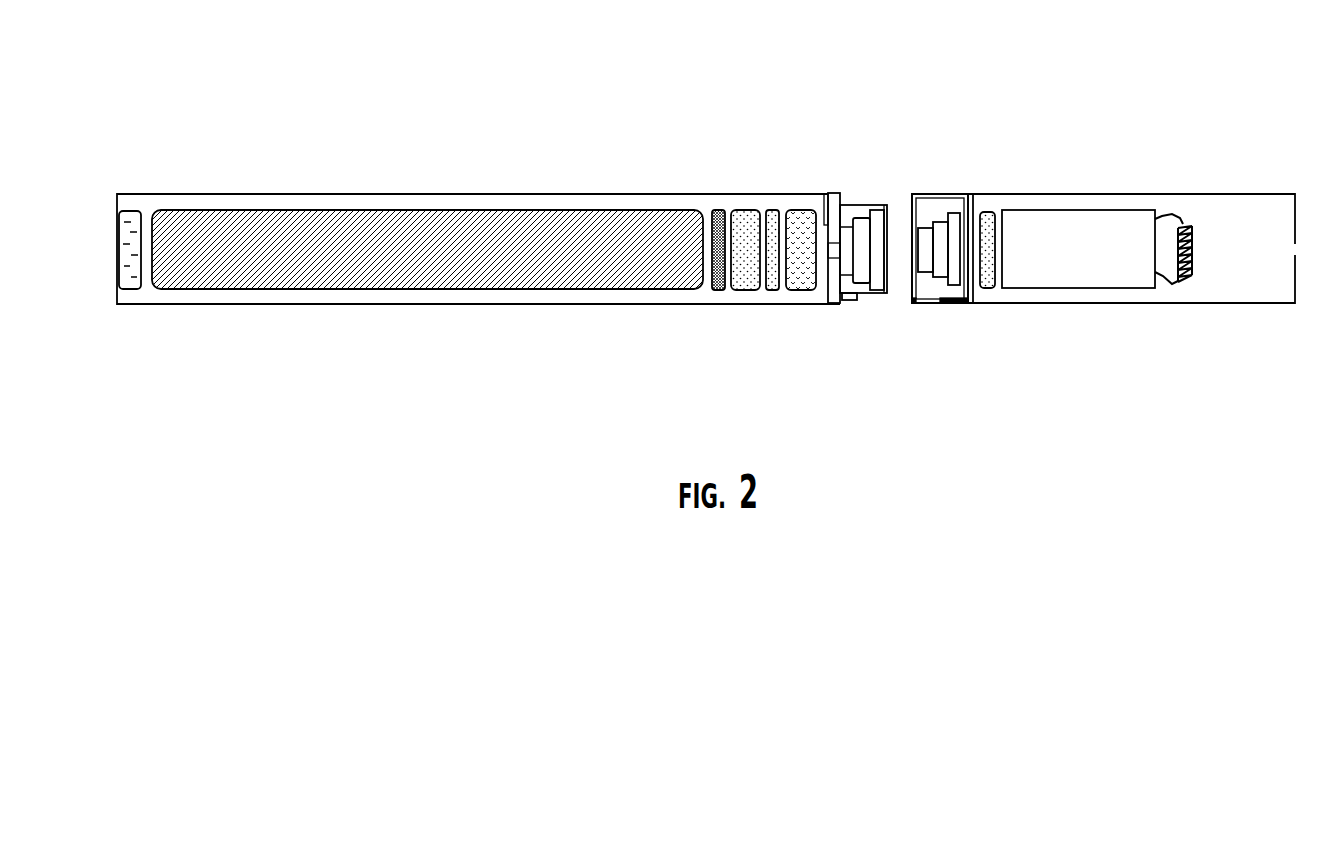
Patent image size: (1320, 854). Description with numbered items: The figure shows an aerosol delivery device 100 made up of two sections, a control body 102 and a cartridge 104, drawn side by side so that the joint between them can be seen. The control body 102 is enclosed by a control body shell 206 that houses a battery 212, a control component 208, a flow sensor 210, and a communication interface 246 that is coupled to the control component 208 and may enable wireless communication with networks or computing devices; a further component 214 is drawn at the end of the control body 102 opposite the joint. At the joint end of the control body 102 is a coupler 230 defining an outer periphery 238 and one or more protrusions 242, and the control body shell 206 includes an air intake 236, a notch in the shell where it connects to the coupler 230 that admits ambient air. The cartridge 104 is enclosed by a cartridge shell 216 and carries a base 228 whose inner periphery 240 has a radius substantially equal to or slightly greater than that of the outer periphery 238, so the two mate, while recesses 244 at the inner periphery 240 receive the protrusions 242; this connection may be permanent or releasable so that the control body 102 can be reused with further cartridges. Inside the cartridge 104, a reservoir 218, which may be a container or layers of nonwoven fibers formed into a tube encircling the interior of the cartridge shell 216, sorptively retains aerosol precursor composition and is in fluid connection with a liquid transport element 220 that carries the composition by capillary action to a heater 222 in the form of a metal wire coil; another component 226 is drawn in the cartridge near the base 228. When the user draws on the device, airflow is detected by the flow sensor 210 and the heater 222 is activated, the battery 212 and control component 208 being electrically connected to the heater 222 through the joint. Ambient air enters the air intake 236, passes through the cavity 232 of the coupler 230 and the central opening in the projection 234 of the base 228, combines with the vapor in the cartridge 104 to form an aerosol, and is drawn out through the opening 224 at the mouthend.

The aerosol delivery device 100 is at (210, 85).
The control body 102 is at (392, 157).
The cartridge 104 is at (1118, 162).
The control body shell 206 is at (253, 304).
The control component 208 is at (748, 292).
The flow sensor 210 is at (805, 292).
The battery 212 is at (397, 288).
The end cap / light 214 is at (128, 290).
The cartridge shell 216 is at (1062, 304).
The reservoir 218 is at (1100, 290).
The liquid transport element 220 is at (1170, 282).
The heater 222 is at (1193, 280).
The opening 224 is at (1293, 248).
The seal 226 is at (987, 290).
The base 228 is at (965, 304).
The coupler 230 is at (867, 294).
The cavity 232 is at (861, 218).
The projection 234 is at (942, 212).
The air intake 236 is at (828, 193).
The outer periphery 238 is at (872, 210).
The inner periphery 240 is at (933, 198).
The protrusions 242 is at (848, 301).
The recesses 244 is at (928, 304).
The communication interface 246 is at (714, 208).